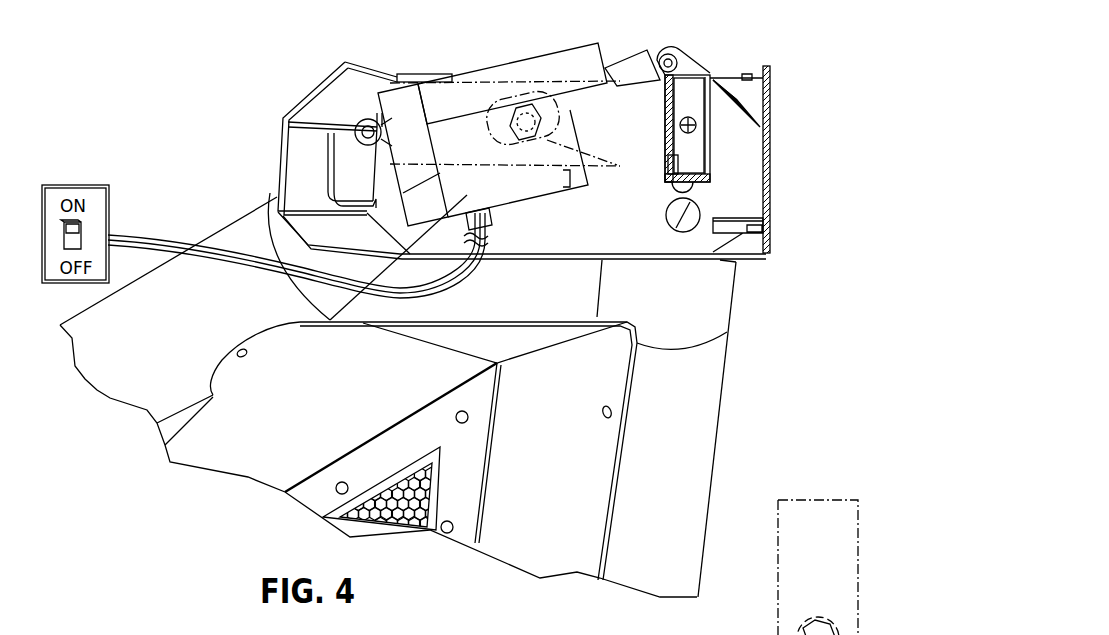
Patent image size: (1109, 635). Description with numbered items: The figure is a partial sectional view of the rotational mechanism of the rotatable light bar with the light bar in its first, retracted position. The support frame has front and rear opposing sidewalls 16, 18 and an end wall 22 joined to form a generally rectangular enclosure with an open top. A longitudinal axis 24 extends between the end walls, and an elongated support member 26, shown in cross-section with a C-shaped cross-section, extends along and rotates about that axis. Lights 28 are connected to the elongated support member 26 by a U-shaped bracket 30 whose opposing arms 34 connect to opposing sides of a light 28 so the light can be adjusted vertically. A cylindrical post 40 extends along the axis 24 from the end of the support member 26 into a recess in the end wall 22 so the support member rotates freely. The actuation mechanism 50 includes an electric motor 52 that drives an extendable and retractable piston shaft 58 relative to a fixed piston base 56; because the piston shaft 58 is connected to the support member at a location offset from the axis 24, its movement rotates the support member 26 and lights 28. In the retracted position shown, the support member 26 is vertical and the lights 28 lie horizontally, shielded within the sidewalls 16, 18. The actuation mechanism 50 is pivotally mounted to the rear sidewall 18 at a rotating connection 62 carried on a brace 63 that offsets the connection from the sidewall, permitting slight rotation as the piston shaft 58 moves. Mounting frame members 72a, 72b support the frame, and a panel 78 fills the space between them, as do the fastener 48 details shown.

The front sidewall 16 is at (768, 95).
The rear sidewall 18 is at (283, 138).
The second end wall 22 is at (640, 218).
The longitudinal axis 24 is at (696, 121).
The elongated support member 26 is at (692, 72).
The lights 28 is at (515, 80).
The U-shaped bracket 30 is at (870, 626).
The opposing arms 34 is at (577, 97).
The cylindrical post 40 is at (695, 131).
The pivot pin 48 is at (668, 54).
The actuation mechanism 50 is at (446, 64).
The electric motor 52 is at (553, 193).
The fixed piston base 56 is at (496, 70).
The piston shaft 58 is at (627, 55).
The rotating connection 62 is at (358, 114).
The brace 63 is at (348, 175).
The housing tube portion 72a is at (700, 398).
The housing lower portion 72b is at (232, 232).
The panel 78 is at (455, 508).